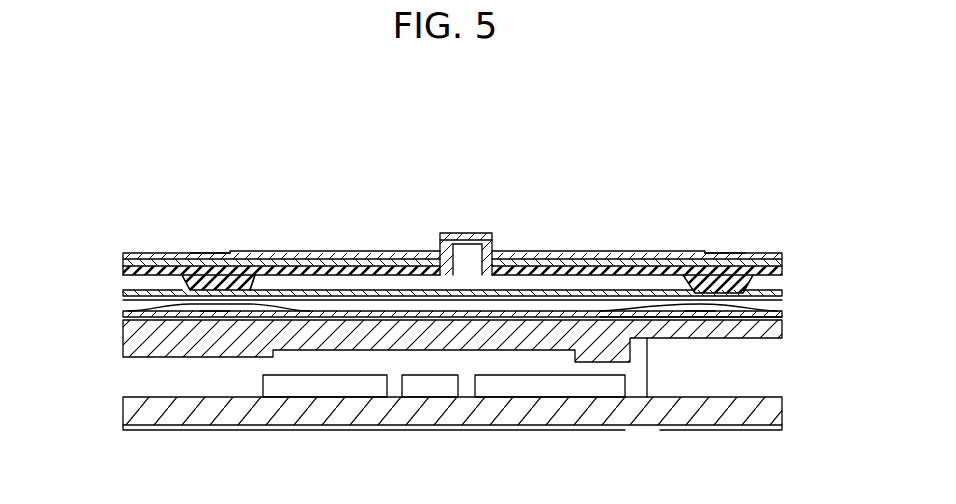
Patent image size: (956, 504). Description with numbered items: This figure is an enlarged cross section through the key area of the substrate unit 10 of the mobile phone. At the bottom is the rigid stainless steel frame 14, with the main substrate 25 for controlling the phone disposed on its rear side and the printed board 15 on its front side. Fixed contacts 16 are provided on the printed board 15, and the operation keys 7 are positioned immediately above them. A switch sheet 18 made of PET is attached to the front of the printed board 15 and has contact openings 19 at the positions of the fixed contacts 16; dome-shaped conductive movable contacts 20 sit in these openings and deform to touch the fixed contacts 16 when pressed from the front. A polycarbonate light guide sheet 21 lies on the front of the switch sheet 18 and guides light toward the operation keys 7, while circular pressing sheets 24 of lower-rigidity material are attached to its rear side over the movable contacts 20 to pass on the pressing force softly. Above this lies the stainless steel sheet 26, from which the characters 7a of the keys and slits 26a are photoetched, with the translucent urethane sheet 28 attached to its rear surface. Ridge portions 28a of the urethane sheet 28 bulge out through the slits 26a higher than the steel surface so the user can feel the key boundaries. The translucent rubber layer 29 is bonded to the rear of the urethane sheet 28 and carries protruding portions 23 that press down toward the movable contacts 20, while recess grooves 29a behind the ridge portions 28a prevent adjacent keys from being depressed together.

The substrate unit 10 is at (122, 167).
The operation keys 7 is at (345, 251).
The characters 7a is at (213, 251).
The stainless steel frame 14 is at (784, 336).
The printed board 15 is at (784, 316).
The fixed contacts 16 is at (216, 312).
The switch sheet 18 is at (128, 307).
The contact openings 19 is at (188, 288).
The conductive movable contacts 20 is at (128, 317).
The light guide sheet 21 is at (128, 299).
The protruding portions 23 is at (262, 276).
The pressing sheets 24 is at (253, 288).
The main substrate 25 is at (646, 418).
The stainless steel sheet 26 is at (128, 254).
The slits 26a is at (487, 252).
The urethane sheet 28 is at (128, 265).
The ridge portions 28a is at (462, 233).
The rubber layer 29 is at (784, 258).
The recess grooves 29a is at (447, 277).